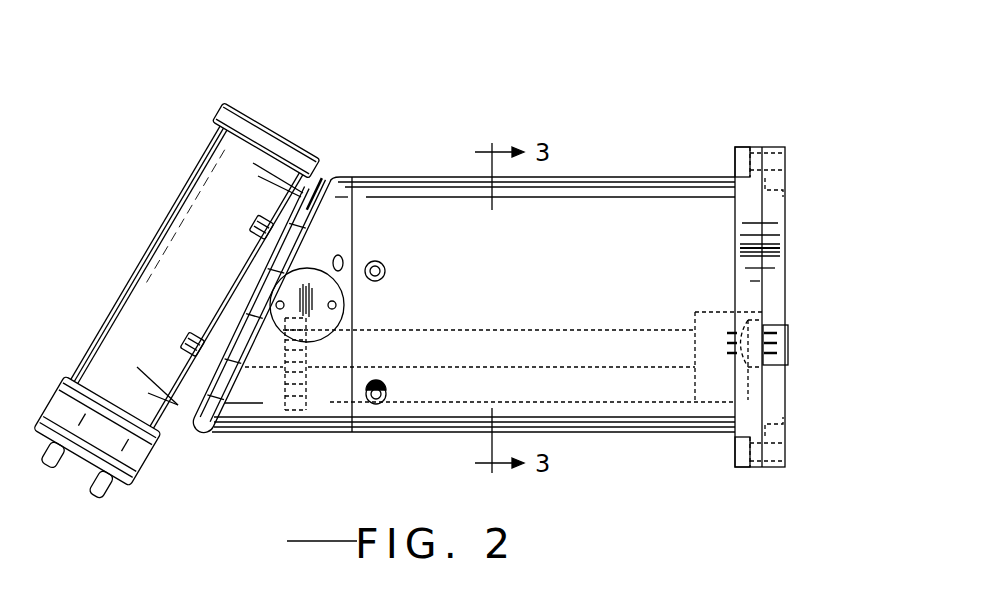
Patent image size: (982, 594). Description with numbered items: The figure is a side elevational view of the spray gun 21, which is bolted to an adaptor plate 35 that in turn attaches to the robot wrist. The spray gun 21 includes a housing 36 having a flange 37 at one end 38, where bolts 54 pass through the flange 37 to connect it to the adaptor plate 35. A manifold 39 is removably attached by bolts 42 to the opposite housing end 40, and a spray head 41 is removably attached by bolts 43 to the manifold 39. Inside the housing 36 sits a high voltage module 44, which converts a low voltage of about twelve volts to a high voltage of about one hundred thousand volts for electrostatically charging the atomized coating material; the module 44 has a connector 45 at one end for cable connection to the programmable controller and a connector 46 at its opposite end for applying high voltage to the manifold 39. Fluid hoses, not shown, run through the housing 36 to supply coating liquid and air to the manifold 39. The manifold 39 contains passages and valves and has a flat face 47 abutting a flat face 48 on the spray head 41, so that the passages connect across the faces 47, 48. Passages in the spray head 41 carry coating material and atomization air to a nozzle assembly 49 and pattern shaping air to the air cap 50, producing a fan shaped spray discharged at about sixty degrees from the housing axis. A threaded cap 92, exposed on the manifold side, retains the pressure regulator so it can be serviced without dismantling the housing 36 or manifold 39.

The spray gun 21 is at (348, 142).
The adaptor plate 35 is at (773, 470).
The housing 36 is at (630, 444).
The flange 37 is at (735, 213).
The housing end 38 is at (733, 176).
The manifold 39 is at (270, 434).
The opposite housing end 40 is at (360, 176).
The spray head 41 is at (140, 275).
The bolts 42 is at (388, 273).
The bolts 43 is at (257, 238).
The high voltage module 44 is at (466, 331).
The connector 45 is at (786, 332).
The connector 46 is at (308, 412).
The flat face 47 is at (197, 363).
The flat face 48 is at (218, 397).
The nozzle assembly 49 is at (77, 475).
The air cap 50 is at (100, 500).
The bolts 54 is at (733, 170).
The cap 92 is at (328, 342).